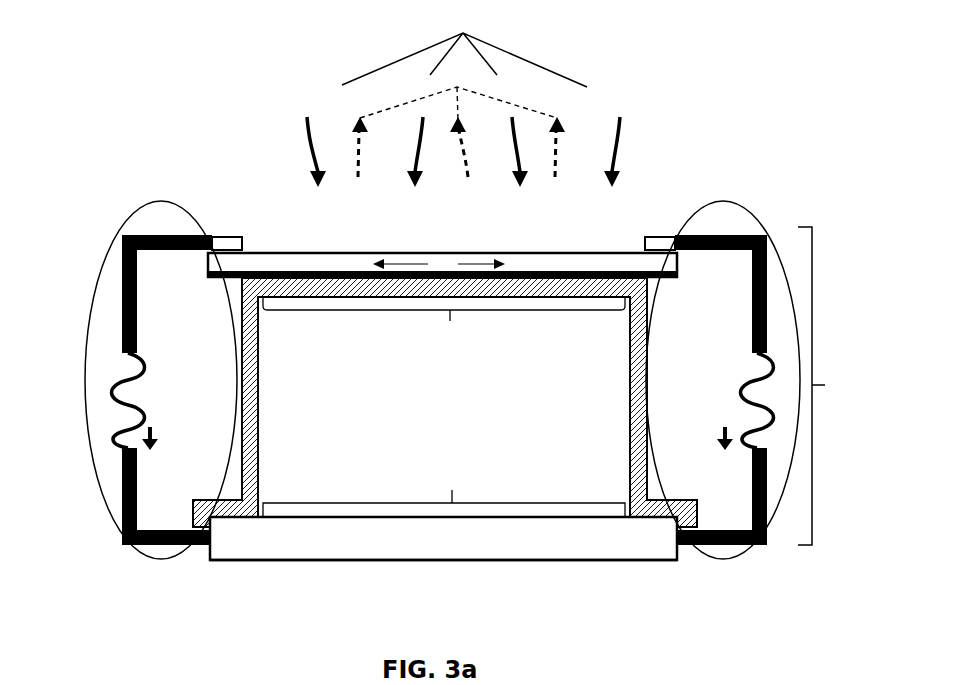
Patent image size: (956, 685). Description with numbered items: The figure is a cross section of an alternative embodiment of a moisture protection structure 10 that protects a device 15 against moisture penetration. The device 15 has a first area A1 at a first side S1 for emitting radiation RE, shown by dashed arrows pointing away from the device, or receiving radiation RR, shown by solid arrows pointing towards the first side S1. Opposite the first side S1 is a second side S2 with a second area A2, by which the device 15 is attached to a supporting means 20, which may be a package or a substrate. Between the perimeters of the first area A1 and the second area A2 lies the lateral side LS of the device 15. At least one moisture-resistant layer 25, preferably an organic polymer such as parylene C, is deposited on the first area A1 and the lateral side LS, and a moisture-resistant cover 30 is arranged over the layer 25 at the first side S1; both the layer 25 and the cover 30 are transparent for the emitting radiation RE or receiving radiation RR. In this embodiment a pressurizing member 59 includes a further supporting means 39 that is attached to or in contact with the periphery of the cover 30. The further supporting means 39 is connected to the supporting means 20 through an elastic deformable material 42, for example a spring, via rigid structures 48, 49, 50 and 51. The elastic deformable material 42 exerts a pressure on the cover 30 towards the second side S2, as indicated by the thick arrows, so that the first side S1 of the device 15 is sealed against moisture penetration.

The moisture protection structure 10 is at (830, 386).
The device 15 is at (277, 468).
The supporting means 20 is at (582, 547).
The moisture-resistant layer 25 is at (647, 370).
The moisture-resistant cover 30 is at (677, 265).
The further supporting means 39 is at (242, 244).
The elastic deformable material 42 is at (107, 450).
The rigid structure 48 is at (122, 268).
The rigid structure 49 is at (767, 260).
The rigid structure 50 is at (123, 508).
The rigid structure 51 is at (767, 533).
The pressurizing member 59 is at (160, 200).
The first area A1 is at (444, 328).
The second area A2 is at (444, 487).
The lateral side LS is at (223, 395).
The receiving radiation RR is at (464, 44).
The emitting radiation RE is at (458, 120).
The first side S1 is at (278, 195).
The second side S2 is at (262, 575).